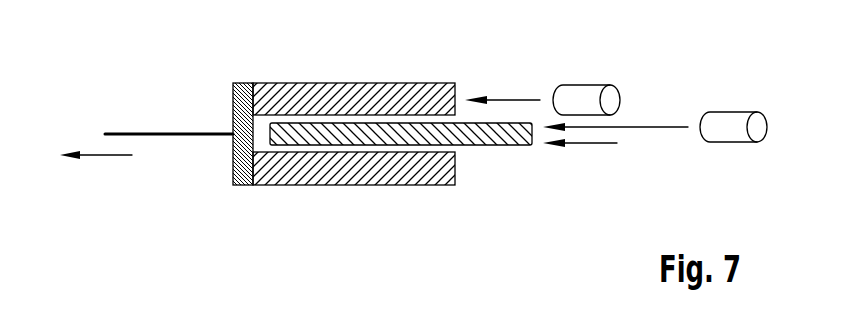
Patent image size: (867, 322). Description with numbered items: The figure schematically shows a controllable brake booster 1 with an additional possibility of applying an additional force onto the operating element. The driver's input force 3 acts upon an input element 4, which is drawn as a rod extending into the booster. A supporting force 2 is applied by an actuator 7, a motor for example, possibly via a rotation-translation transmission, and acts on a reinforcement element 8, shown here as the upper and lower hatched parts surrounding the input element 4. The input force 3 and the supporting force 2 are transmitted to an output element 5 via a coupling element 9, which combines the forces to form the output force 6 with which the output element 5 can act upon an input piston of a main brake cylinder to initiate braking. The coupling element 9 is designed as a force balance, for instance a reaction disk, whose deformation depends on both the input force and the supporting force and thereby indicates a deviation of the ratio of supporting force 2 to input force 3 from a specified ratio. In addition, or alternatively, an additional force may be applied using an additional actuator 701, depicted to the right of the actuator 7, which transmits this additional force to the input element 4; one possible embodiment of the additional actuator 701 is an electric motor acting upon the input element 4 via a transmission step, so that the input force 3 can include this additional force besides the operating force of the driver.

The brake booster 1 is at (138, 58).
The supporting force 2 is at (508, 99).
The input force 3 is at (585, 145).
The input element 4 is at (500, 147).
The output element 5 is at (175, 137).
The output force 6 is at (97, 157).
The actuator 7 is at (587, 85).
The reinforcement element 8 is at (361, 83).
The coupling element 9 is at (243, 186).
The additional actuator 701 is at (726, 112).